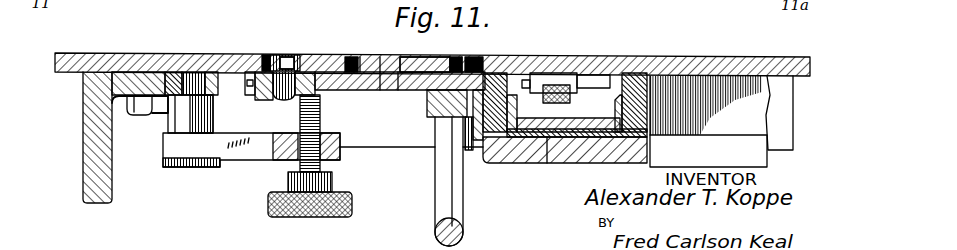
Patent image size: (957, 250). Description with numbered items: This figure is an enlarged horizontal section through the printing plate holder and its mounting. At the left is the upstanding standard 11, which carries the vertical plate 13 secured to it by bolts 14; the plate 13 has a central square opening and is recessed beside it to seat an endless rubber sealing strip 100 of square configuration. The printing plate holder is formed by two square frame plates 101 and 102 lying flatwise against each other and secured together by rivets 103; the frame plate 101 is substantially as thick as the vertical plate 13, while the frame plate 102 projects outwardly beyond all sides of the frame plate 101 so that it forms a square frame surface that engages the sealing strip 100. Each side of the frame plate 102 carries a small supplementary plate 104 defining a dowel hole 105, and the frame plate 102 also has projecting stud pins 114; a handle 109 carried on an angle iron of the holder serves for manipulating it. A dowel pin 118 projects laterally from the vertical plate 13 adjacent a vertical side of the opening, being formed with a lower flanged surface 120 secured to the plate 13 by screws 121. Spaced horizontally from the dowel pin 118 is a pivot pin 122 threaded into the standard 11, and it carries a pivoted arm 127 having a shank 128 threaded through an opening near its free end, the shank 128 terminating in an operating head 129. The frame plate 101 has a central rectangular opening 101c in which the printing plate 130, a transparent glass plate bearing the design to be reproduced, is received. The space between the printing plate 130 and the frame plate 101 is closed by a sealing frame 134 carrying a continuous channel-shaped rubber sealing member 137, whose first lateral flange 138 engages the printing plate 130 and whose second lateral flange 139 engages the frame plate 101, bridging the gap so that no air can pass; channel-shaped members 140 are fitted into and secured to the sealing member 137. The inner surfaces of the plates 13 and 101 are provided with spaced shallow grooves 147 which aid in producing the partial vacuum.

The upstanding standard 11 is at (113, 178).
The vertical plate 13 is at (63, 73).
The bolt 14 is at (144, 100).
The endless rubber sealing strip 100 is at (347, 58).
The frame plate 101 is at (501, 66).
The central rectangular opening 101c is at (622, 57).
The frame plate 102 is at (409, 92).
The rivet 103 is at (406, 58).
The supplementary plate 104 is at (255, 88).
The dowel hole 105 is at (263, 102).
The handle 109 is at (445, 188).
The stud pin 114 is at (258, 58).
The dowel pin 118 is at (286, 103).
The lower flanged surface 120 is at (292, 60).
The screw 121 is at (268, 56).
The pivot pin 122 is at (198, 140).
The pivoted arm 127 is at (250, 150).
The shank 128 is at (321, 121).
The operating head 129 is at (312, 218).
The printing plate 130 is at (696, 58).
The sealing frame 134 is at (547, 165).
The channel-shaped rubber sealing member 137 is at (521, 140).
The first lateral flange 138 is at (655, 139).
The second lateral flange 139 is at (480, 162).
The channel-shaped member 140 is at (553, 140).
The channel or groove 147 is at (106, 54).